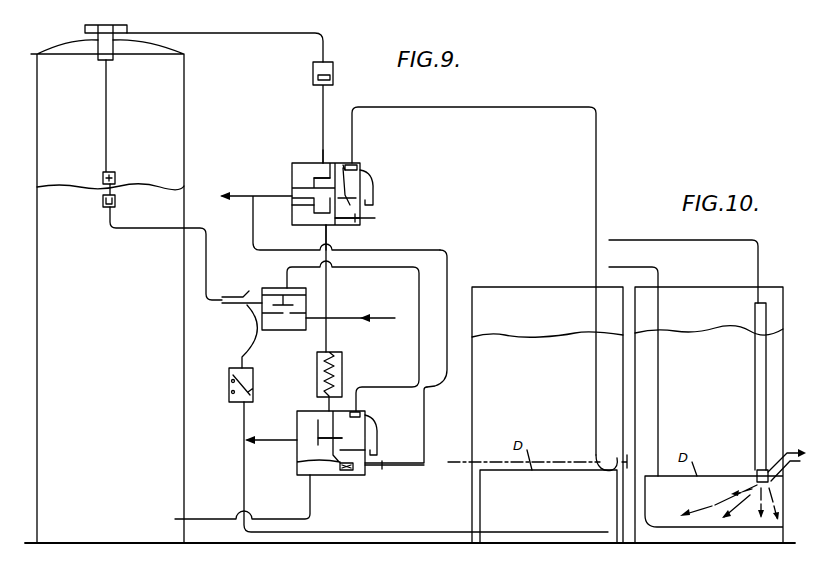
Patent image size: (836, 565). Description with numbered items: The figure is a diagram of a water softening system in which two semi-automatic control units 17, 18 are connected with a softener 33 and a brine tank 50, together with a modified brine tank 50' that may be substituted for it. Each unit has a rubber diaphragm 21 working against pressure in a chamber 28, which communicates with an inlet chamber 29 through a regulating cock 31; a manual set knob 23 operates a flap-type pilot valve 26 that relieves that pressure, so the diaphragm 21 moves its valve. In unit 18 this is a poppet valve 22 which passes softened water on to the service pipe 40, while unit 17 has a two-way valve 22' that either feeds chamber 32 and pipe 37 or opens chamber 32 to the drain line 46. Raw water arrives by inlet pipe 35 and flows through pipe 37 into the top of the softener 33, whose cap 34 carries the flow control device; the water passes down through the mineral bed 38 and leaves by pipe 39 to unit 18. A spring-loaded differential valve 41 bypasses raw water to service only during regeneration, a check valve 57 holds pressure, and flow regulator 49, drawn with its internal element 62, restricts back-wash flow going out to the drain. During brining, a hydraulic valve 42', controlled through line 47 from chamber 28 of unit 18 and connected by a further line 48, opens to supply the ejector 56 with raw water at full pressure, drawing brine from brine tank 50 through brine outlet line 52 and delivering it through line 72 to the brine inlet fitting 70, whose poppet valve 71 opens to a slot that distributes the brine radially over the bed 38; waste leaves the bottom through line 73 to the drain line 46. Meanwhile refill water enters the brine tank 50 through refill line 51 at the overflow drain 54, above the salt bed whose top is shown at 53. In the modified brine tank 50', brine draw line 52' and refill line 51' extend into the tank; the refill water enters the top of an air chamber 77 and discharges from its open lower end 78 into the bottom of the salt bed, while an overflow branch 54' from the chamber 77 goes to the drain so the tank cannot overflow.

In FIG. 9, the control unit 17 is at (312, 160).
In FIG. 9, the control unit 18 is at (318, 480).
In FIG. 9, the rubber diaphragm 21 is at (331, 162).
In FIG. 9, the poppet valve 22 is at (321, 427).
In FIG. 9, the two-way valve 22' is at (294, 175).
In FIG. 9, the manual set knob 23 is at (372, 183).
In FIG. 9, the pilot valve 26 is at (358, 165).
In FIG. 9, the chamber 28 is at (356, 198).
In FIG. 9, the chamber 29 is at (296, 226).
In FIG. 9, the regulating cock 31 is at (377, 221).
In FIG. 9, the chamber 32 is at (300, 210).
In FIG. 9, the softener 33 is at (185, 138).
In FIG. 9, the cap 34 is at (85, 33).
In FIG. 9, the raw water inlet pipe 35 is at (380, 320).
In FIG. 9, the pipe 37 is at (238, 34).
In FIG. 9, the bed of mineral 38 is at (86, 187).
In FIG. 9, the pipe 39 is at (204, 520).
In FIG. 9, the service pipe 40 is at (272, 447).
In FIG. 9, the spring-loaded differential valve 41 is at (343, 376).
In FIG. 9, the hydraulic valve 42' is at (284, 321).
In FIG. 9, the drain line 46 is at (243, 200).
In FIG. 9, the line 47 is at (408, 250).
In FIG. 9, the pipe 48 is at (290, 288).
In FIG. 9, the flow regulator 49 is at (333, 70).
In FIG. 9, the brine tank 50 is at (531, 415).
In FIG. 10, the brine tank 50' is at (713, 400).
In FIG. 9, the refill line 51 is at (493, 281).
In FIG. 10, the refill line 51' is at (697, 259).
In FIG. 9, the brine outlet line 52 is at (426, 467).
In FIG. 10, the brine draw line 52' is at (649, 366).
In FIG. 9, the top of salt bed 53 is at (505, 335).
In FIG. 10, the top of salt bed 53 is at (715, 328).
In FIG. 9, the overflow drain 54 is at (538, 445).
In FIG. 10, the overflow branch 54' is at (787, 453).
In FIG. 9, the ejector 56 is at (231, 306).
In FIG. 9, the check valve 57 is at (254, 380).
In FIG. 9, the valve element 62 is at (313, 75).
In FIG. 9, the brine inlet fitting 70 is at (116, 200).
In FIG. 9, the poppet valve 71 is at (116, 184).
In FIG. 9, the line 72 is at (207, 272).
In FIG. 9, the line 73 is at (450, 262).
In FIG. 10, the air chamber 77 is at (753, 345).
In FIG. 10, the open lower end 78 is at (757, 471).